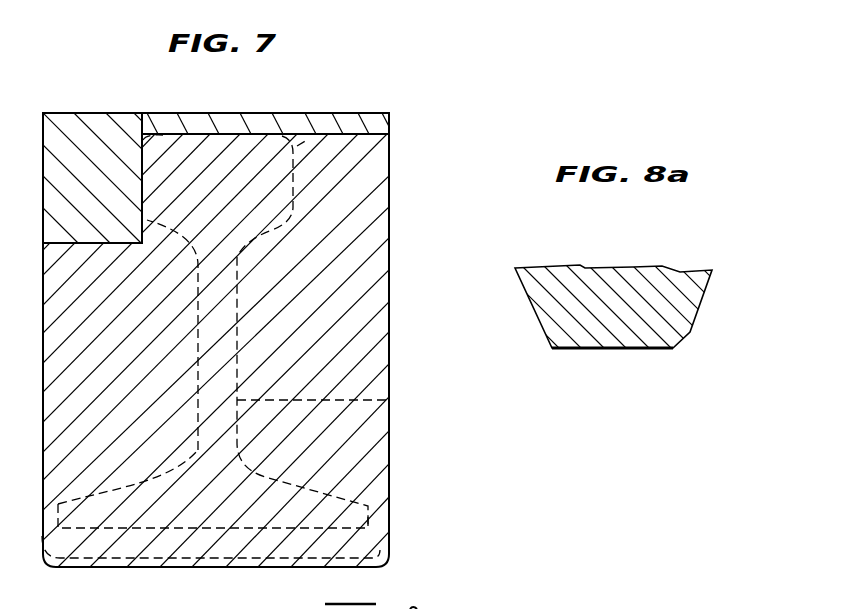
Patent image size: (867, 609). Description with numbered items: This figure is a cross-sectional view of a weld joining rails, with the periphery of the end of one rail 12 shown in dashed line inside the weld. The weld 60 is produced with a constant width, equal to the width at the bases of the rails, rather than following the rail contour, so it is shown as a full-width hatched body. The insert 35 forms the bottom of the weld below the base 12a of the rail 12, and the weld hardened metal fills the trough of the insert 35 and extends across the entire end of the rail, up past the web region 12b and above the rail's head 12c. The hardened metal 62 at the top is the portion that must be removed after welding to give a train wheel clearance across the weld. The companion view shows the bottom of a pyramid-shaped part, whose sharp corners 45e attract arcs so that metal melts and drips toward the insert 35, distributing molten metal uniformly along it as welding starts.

In FIG. 7, the weld 60 is at (390, 353).
In FIG. 7, the hardened metal 62 is at (105, 128).
In FIG. 7, the head 12c is at (317, 123).
In FIG. 7, the rail 12 is at (290, 221).
In FIG. 7, the intermediate portion 12b is at (380, 403).
In FIG. 7, the base 12a is at (340, 497).
In FIG. 7, the insert 35 is at (177, 568).
In FIG. 8a, the sharp corners 45e is at (527, 295).